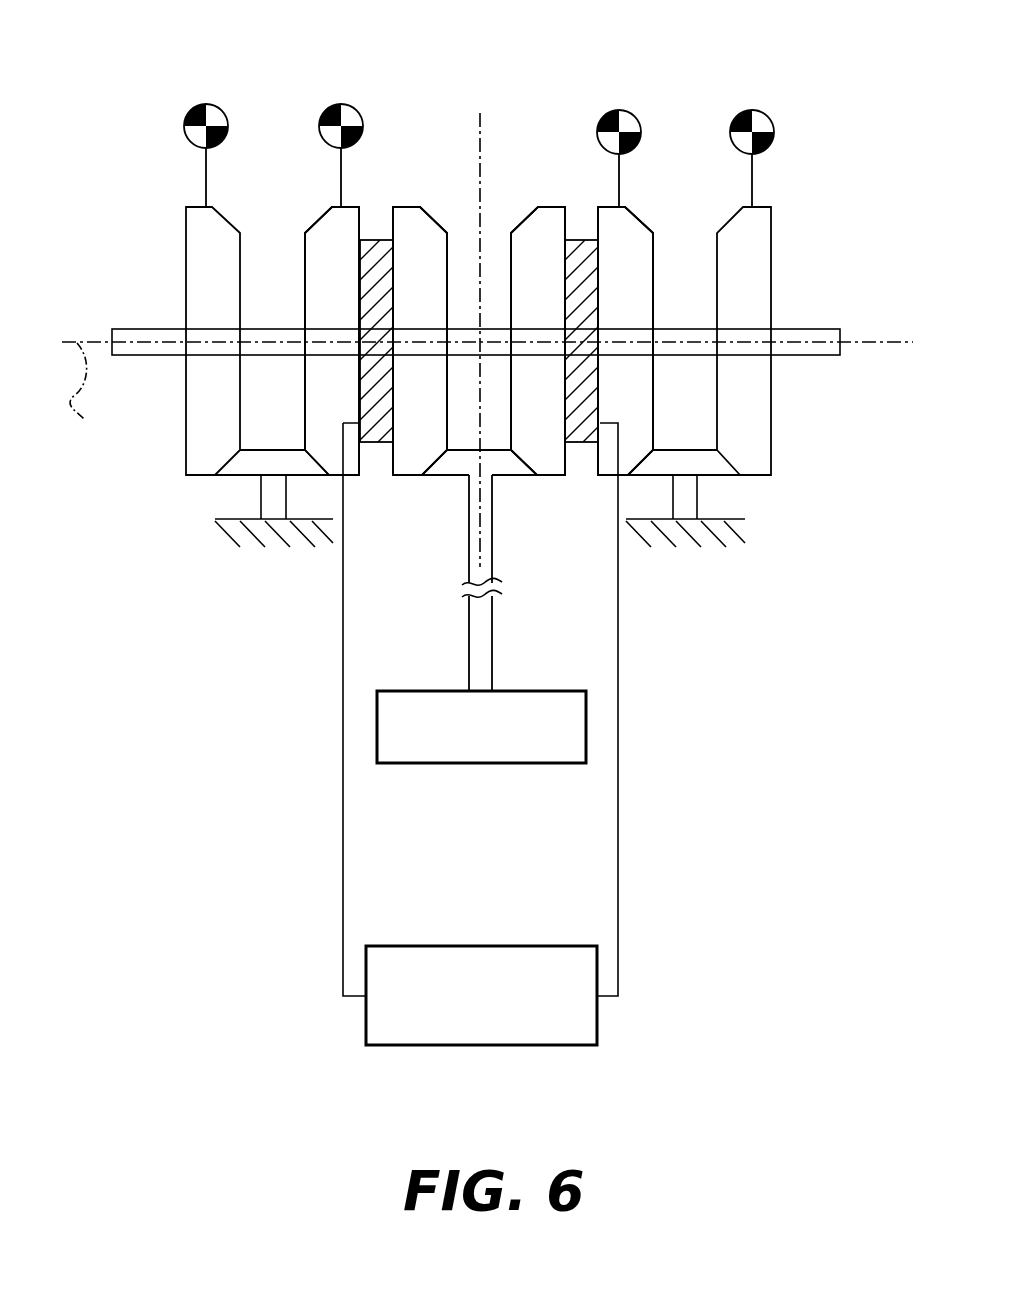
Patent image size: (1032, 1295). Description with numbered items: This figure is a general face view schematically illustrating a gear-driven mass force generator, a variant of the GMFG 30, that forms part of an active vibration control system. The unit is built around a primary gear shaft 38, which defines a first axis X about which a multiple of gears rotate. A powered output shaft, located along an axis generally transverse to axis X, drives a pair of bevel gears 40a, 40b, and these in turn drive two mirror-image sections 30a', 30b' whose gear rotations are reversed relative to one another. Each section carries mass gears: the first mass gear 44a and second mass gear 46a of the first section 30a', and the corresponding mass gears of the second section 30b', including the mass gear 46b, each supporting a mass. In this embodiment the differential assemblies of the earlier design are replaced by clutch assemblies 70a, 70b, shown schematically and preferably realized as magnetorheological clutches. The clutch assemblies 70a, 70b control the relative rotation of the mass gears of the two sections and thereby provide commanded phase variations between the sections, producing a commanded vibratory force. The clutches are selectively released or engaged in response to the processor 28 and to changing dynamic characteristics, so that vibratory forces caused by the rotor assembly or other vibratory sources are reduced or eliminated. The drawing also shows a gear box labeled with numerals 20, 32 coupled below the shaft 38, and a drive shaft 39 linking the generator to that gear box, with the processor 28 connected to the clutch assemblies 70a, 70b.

The section 30a' is at (357, 44).
The section 30b' is at (664, 44).
The GMFG 30 is at (885, 194).
The second mass gear 46a is at (186, 226).
The first mass gear 44a is at (320, 226).
The bevel gear 40a is at (413, 222).
The bevel gear 40b is at (552, 222).
The mass gear 46b is at (764, 237).
The first axis X is at (81, 397).
The clutch assembly 70a is at (382, 439).
The clutch assembly 70b is at (591, 439).
The primary gear shaft 38 is at (479, 347).
The drive shaft 39 is at (493, 557).
The gear box 20 is at (481, 767).
The gear box 32 is at (492, 764).
The processor 28 is at (492, 1046).